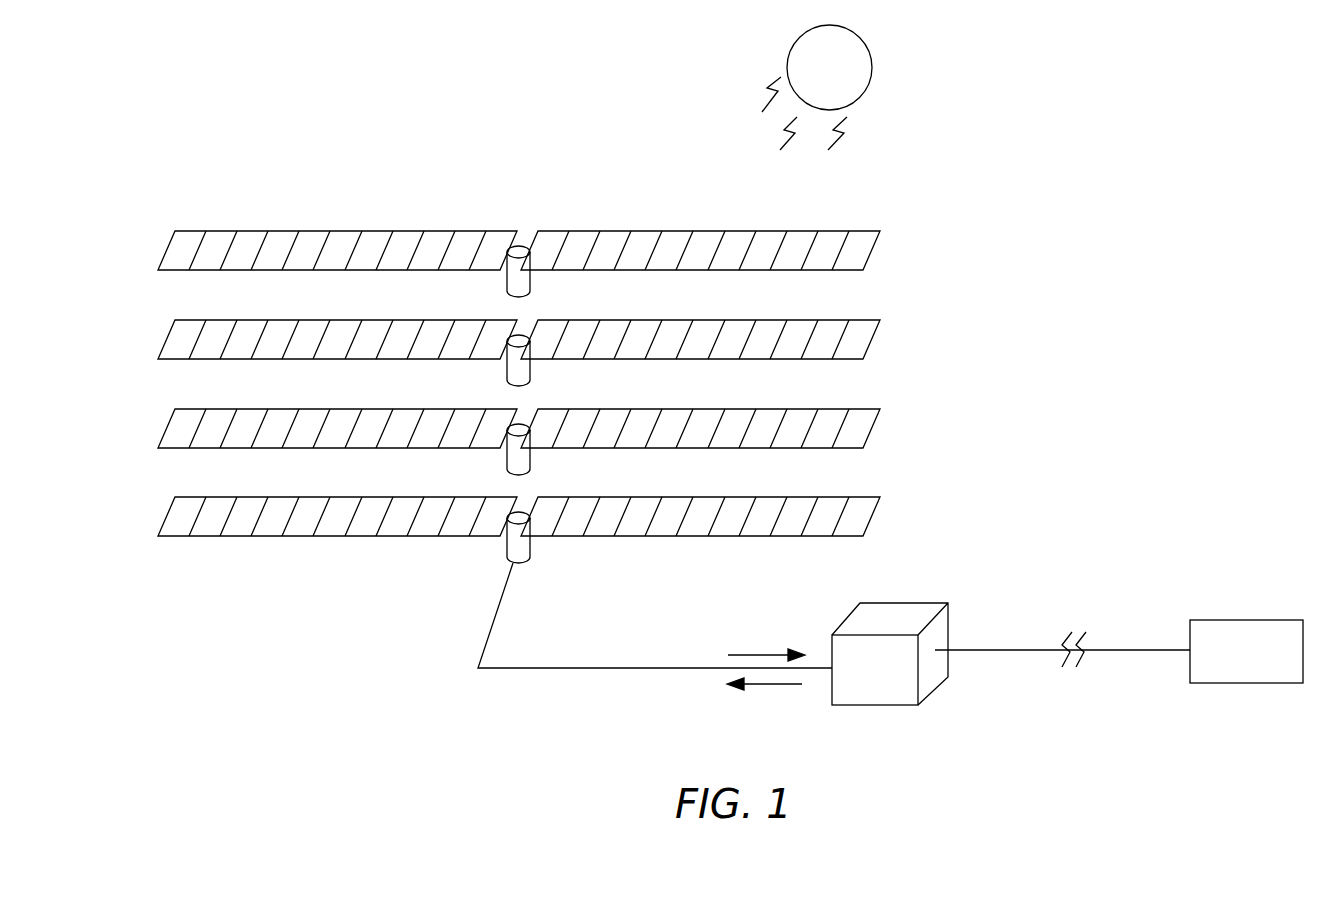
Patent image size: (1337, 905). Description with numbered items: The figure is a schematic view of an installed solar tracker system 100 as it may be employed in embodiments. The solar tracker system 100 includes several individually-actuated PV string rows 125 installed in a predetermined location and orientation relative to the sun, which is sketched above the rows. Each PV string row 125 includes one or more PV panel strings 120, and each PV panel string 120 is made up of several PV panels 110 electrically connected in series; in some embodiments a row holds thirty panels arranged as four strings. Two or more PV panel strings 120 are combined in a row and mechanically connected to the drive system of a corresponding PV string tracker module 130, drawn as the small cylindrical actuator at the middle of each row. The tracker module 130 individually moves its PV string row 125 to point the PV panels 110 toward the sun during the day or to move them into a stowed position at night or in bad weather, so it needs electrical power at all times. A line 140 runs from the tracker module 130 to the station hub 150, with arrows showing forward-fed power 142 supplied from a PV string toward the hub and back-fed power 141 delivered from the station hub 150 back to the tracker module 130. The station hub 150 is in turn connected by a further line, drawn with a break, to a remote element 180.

The solar tracker system 100 is at (990, 156).
The PV panels 110 is at (240, 526).
The PV panel strings 120 is at (506, 419).
The PV string rows 125 is at (895, 316).
The PV string tracker module 130 is at (515, 548).
The communication line 140 is at (592, 670).
The back-fed power 141 is at (772, 686).
The forward-fed power 142 is at (760, 652).
The station hub 150 is at (905, 613).
The remote server 180 is at (1258, 620).